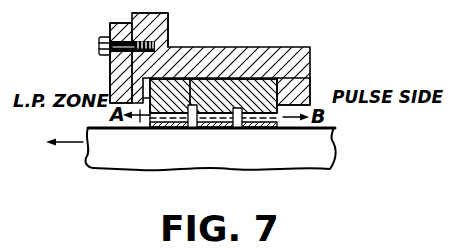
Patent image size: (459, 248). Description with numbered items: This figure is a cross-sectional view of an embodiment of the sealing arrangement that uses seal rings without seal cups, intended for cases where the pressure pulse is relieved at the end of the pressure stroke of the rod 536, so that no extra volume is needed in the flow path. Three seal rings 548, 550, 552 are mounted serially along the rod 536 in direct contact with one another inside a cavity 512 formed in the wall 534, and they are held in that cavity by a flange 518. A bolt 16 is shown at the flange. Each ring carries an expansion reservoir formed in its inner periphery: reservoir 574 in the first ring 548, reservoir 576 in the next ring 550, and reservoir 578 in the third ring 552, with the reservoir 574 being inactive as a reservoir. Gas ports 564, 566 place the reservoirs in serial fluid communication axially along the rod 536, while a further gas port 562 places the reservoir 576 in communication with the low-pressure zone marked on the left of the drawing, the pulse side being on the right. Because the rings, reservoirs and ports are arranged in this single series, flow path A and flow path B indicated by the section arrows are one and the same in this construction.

The bolt 16 is at (99, 42).
The flange 518 is at (107, 70).
The seal ring 548 is at (168, 92).
The wall 534 is at (283, 47).
The cavity 512 is at (213, 90).
The seal ring 550 is at (215, 89).
The seal ring 552 is at (275, 89).
The gas port 562 is at (172, 128).
The gas port 564 is at (227, 128).
The gas port 566 is at (270, 128).
The expansion reservoir 574 is at (139, 130).
The expansion reservoir 576 is at (193, 129).
The expansion reservoir 578 is at (240, 129).
The rod 536 is at (320, 162).